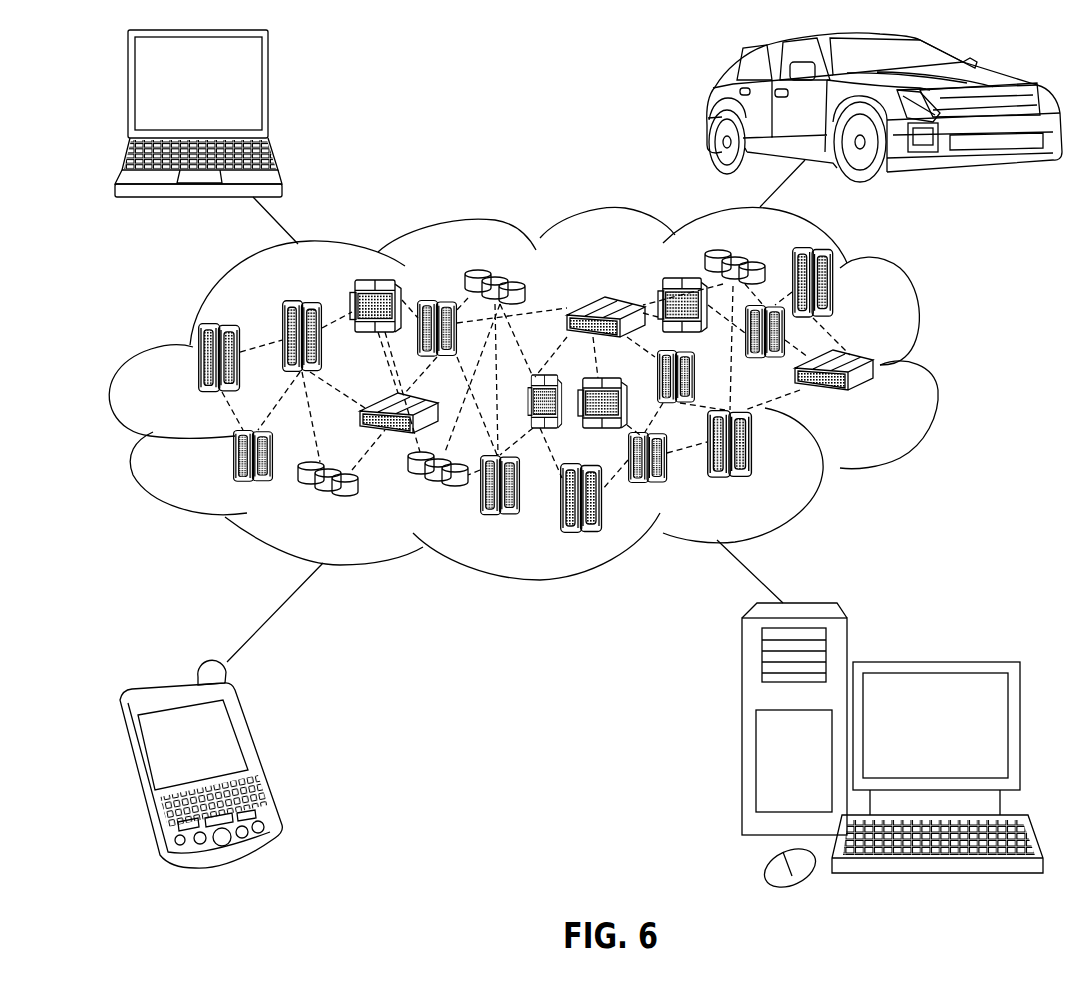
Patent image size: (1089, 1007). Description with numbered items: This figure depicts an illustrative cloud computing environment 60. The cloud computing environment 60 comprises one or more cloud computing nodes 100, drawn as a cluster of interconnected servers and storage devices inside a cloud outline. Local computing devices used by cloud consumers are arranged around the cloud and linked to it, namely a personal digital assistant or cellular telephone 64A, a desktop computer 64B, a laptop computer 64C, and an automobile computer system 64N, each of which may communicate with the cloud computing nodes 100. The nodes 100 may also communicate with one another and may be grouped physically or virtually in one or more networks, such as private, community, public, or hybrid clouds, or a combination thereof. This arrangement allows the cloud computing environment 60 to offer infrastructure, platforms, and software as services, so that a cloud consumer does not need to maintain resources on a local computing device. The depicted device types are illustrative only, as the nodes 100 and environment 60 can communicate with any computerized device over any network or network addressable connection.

The cloud computing environment 60 is at (933, 372).
The cloud computing nodes 100 is at (873, 400).
The personal digital assistant (PDA) or cellular telephone 64A is at (258, 757).
The desktop computer 64B is at (932, 660).
The laptop computer 64C is at (268, 93).
The automobile computer system 64N is at (710, 110).